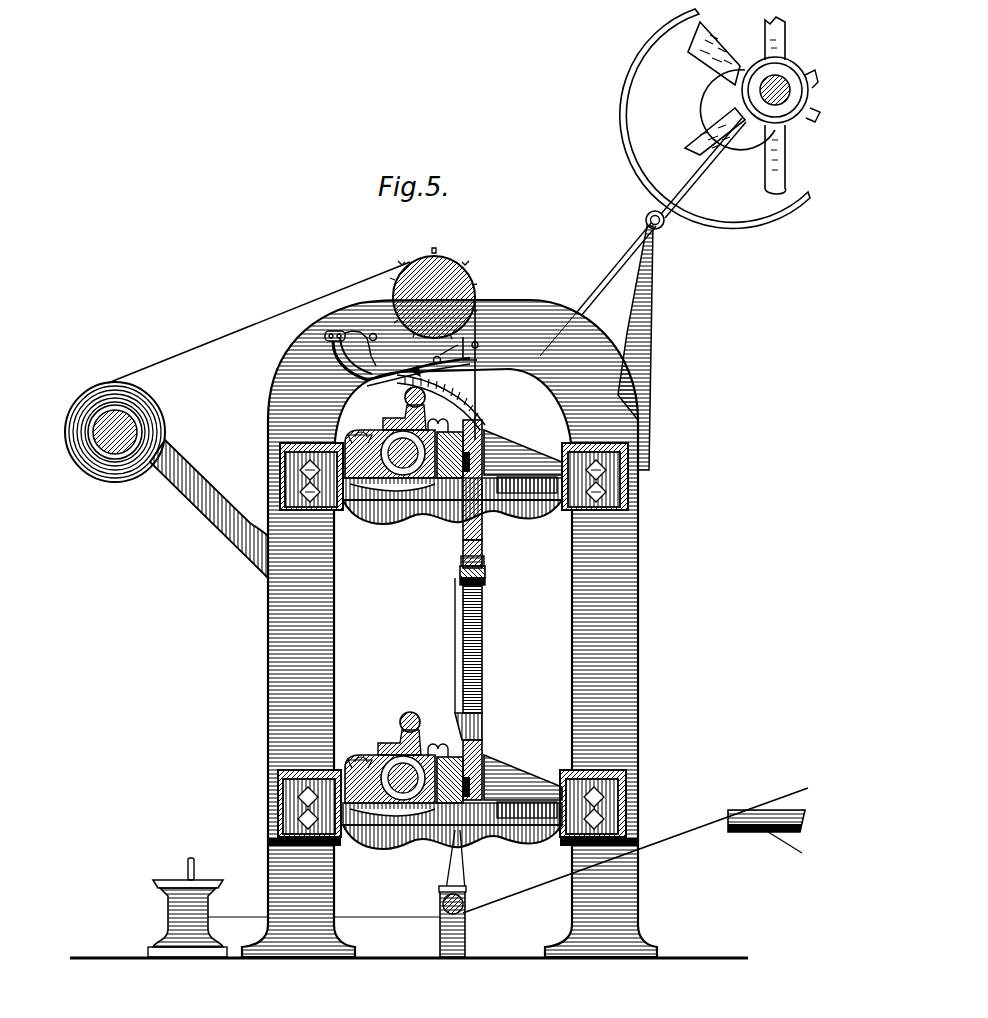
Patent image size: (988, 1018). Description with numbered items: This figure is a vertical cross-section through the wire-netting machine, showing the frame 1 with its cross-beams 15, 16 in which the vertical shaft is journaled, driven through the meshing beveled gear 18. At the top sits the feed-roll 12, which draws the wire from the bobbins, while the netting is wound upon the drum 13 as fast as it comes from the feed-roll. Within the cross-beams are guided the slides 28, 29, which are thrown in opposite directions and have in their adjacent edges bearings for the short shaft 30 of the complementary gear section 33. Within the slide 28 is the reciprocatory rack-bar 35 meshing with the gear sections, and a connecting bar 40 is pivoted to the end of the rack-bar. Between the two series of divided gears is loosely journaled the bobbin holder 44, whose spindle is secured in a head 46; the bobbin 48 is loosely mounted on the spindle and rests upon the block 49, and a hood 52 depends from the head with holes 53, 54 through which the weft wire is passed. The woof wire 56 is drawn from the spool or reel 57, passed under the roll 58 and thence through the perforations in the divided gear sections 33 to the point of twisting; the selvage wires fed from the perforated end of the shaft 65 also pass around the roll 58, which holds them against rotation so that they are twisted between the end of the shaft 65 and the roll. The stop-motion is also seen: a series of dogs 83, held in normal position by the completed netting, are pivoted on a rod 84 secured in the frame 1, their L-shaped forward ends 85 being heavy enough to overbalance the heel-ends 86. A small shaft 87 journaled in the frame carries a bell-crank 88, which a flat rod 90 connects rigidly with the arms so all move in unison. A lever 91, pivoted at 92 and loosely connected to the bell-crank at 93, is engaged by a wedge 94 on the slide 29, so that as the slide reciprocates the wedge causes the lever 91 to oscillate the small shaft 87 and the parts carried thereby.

The frame 1 is at (270, 394).
The feed-roll 12 is at (476, 290).
The drum 13 is at (137, 432).
The cross-beam 15 is at (280, 460).
The cross-beam 16 is at (303, 763).
The beveled gear 18 is at (593, 775).
The slide 28 is at (440, 467).
The slide 29 is at (486, 476).
The short shaft 30 is at (493, 433).
The gear section 33 is at (456, 480).
The rack-bar 35 is at (448, 800).
The connecting bar 40 is at (406, 404).
The bobbin holder 44 is at (484, 575).
The head 46 is at (467, 494).
The bobbin 48 is at (483, 646).
The block 49 is at (481, 726).
The hood 52 is at (486, 582).
The hole 53 is at (465, 564).
The hole 54 is at (480, 505).
The woof wire 56 is at (455, 630).
The spool or reel 57 is at (167, 905).
The roll 58 is at (465, 910).
The shaft 65 is at (760, 832).
The dogs 83 is at (452, 368).
The rod 84 is at (437, 357).
The forward ends of dogs 85 is at (478, 346).
The heel-ends of dogs 86 is at (385, 386).
The small shaft 87 is at (373, 333).
The bell-crank 88 is at (352, 336).
The flat rod 90 is at (312, 353).
The lever 91 is at (438, 421).
The pivot 92 is at (414, 368).
The connection 93 is at (330, 333).
The wedge 94 is at (497, 413).